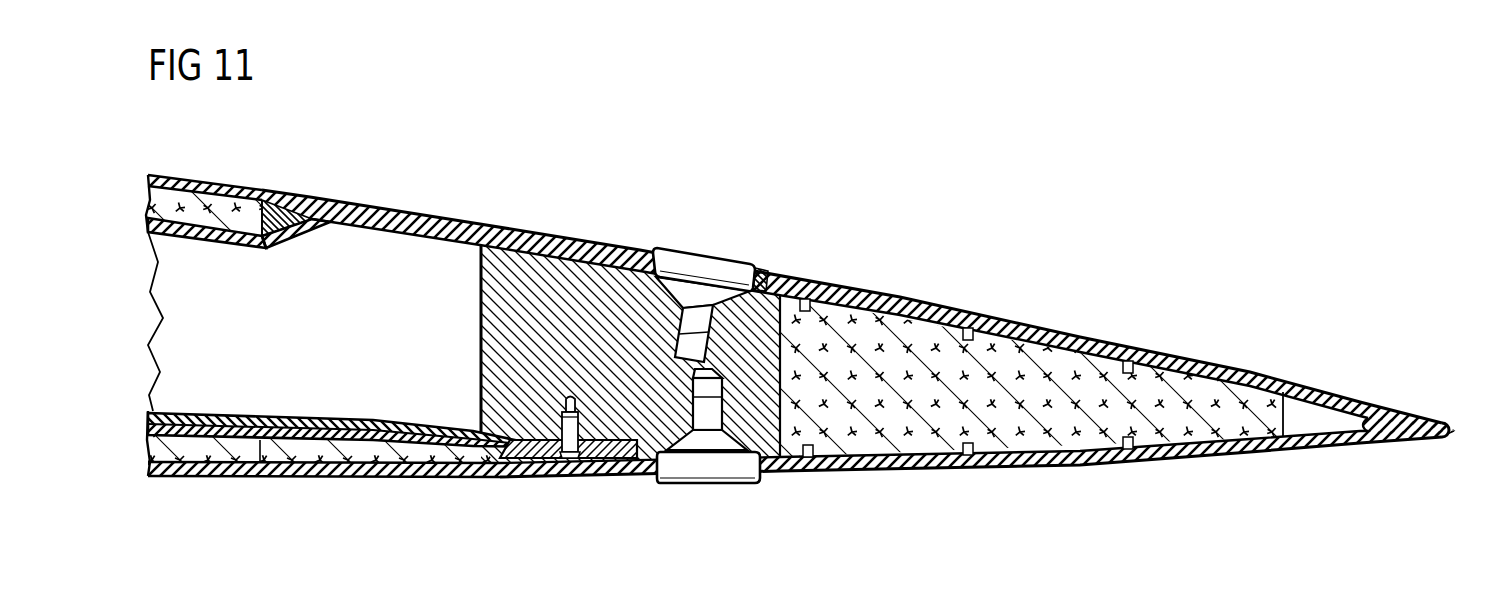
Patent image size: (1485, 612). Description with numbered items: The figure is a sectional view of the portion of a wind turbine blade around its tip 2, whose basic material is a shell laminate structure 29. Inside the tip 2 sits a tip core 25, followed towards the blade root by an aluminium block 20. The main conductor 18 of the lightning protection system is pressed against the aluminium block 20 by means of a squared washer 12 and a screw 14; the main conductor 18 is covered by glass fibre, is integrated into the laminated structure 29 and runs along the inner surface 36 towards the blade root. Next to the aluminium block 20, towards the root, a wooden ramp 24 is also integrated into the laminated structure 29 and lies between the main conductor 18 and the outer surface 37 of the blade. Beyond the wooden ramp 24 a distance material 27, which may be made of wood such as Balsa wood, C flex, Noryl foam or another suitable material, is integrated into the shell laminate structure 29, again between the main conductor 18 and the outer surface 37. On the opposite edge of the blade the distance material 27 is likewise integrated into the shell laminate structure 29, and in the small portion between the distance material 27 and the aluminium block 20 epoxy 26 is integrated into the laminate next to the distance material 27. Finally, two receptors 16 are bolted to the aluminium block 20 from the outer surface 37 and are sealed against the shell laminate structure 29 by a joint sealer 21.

The tip 2 is at (1457, 434).
The squared washer 12 is at (620, 470).
The screw 14 is at (569, 474).
The receptors 16 is at (708, 268).
The main conductor 18 is at (518, 476).
The aluminium block 20 is at (556, 264).
The joint sealer 21 is at (757, 275).
The wooden ramp 24 is at (411, 462).
The tip core 25 is at (1015, 343).
The epoxy 26 is at (287, 212).
The distance material 27 is at (240, 205).
The shell laminate structure 29 is at (462, 233).
The inner surface 36 is at (318, 414).
The outer surface 37 is at (172, 178).